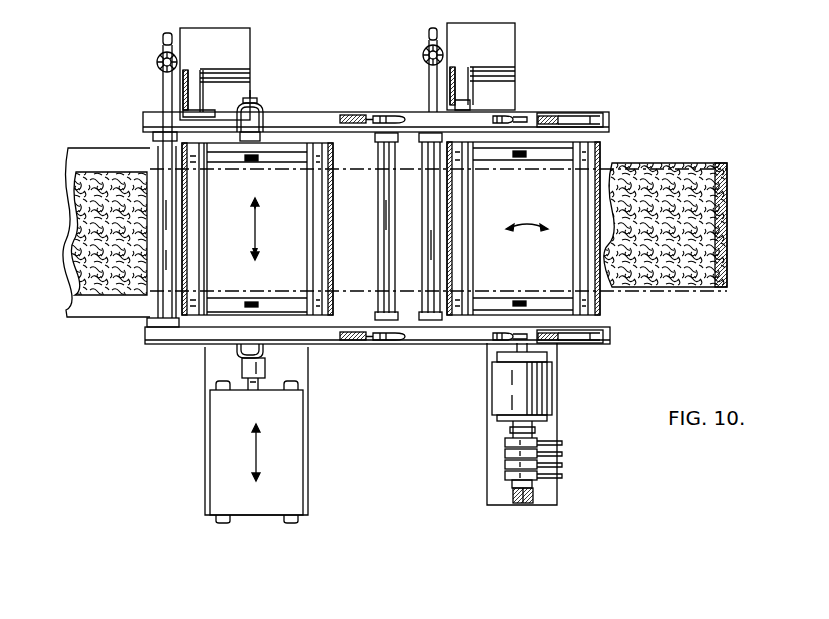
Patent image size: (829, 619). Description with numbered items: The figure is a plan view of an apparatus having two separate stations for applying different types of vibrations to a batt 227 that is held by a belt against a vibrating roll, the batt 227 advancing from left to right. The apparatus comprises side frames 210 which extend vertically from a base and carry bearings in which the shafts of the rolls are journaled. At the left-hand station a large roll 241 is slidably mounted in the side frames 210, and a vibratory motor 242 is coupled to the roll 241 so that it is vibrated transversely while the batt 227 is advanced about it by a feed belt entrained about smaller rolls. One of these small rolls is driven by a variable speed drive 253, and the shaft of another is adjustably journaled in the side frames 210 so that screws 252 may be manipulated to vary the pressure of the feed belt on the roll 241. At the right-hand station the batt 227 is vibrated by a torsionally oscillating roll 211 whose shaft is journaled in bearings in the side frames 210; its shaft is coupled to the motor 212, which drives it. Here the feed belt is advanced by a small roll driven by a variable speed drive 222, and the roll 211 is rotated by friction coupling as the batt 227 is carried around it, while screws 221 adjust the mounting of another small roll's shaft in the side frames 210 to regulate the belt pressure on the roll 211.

The side frames 210 is at (417, 127).
The roll 211 is at (523, 228).
The motor 212 is at (543, 395).
The screws 221 is at (513, 112).
The variable speed drive 222 is at (458, 82).
The batt 227 is at (100, 232).
The roll 241 is at (257, 229).
The vibratory motor 242 is at (288, 470).
The screws 252 is at (388, 117).
The variable speed drive 253 is at (190, 95).